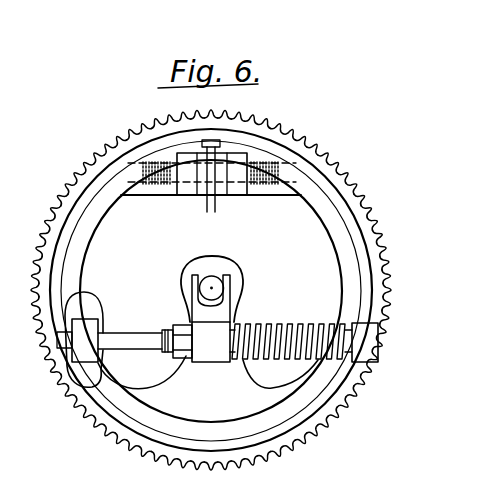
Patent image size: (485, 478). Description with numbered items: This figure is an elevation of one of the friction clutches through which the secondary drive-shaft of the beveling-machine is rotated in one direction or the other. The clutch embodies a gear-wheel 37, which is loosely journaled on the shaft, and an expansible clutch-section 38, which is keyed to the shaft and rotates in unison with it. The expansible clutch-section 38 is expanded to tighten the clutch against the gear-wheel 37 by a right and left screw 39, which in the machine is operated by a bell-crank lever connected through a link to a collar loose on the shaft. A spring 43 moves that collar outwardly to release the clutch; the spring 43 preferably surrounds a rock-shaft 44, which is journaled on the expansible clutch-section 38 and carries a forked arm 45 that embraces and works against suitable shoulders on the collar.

The gear-wheel 37 is at (377, 269).
The expansible clutch-section 38 is at (191, 333).
The right and left screw 39 is at (284, 172).
The spring 43 is at (300, 362).
The rock-shaft 44 is at (155, 322).
The forked arm 45 is at (222, 312).